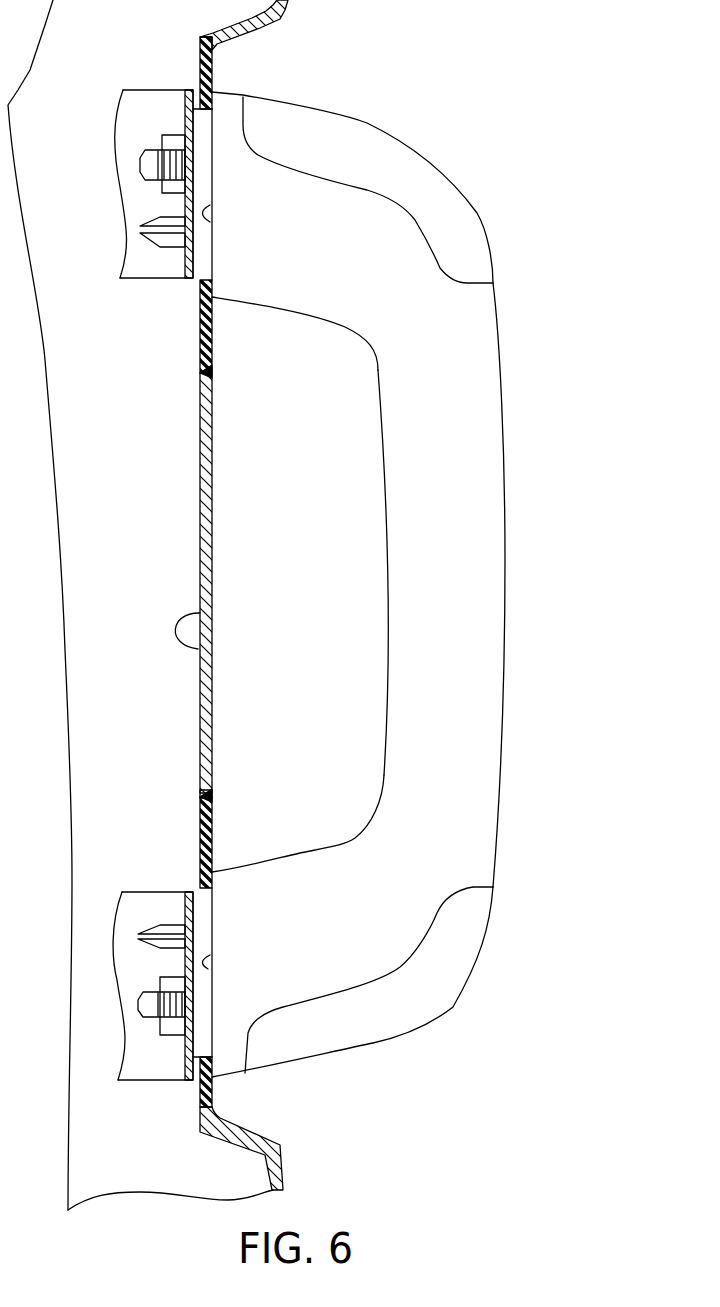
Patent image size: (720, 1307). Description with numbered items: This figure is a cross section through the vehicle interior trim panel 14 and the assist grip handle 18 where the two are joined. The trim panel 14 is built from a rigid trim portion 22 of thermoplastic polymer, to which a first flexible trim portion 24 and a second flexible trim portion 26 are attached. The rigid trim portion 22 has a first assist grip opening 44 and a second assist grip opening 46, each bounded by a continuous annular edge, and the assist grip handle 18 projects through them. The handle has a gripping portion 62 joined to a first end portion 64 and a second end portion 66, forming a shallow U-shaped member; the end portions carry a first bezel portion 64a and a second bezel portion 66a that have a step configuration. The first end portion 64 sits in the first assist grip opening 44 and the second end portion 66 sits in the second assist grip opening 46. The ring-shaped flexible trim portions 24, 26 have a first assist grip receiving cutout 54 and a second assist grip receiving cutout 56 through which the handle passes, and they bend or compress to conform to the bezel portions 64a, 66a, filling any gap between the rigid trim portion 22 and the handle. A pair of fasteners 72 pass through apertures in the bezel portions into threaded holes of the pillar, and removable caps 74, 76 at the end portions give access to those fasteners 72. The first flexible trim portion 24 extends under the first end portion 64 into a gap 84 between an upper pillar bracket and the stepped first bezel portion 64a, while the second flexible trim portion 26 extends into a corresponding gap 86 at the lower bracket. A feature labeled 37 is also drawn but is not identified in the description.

The vehicle interior trim panel 14 is at (302, 18).
The assist grip handle 18 is at (398, 584).
The rigid trim portion 22 is at (283, 1165).
The first flexible trim portion 24 is at (200, 325).
The second flexible trim portion 26 is at (200, 845).
The retaining loop 37 is at (198, 649).
The first assist grip opening 44 is at (212, 372).
The second assist grip opening 46 is at (212, 797).
The first assist grip receiving cutout 54 is at (203, 113).
The second assist grip receiving cutout 56 is at (205, 896).
The gripping portion 62 is at (450, 635).
The first end portion 64 is at (291, 239).
The first bezel portion 64a is at (210, 222).
The second end portion 66 is at (293, 916).
The second bezel portion 66a is at (208, 969).
The fasteners 72 is at (146, 162).
The removable cap 74 is at (364, 160).
The removable cap 76 is at (387, 1000).
The gap 84 is at (195, 282).
The gap 86 is at (193, 1078).